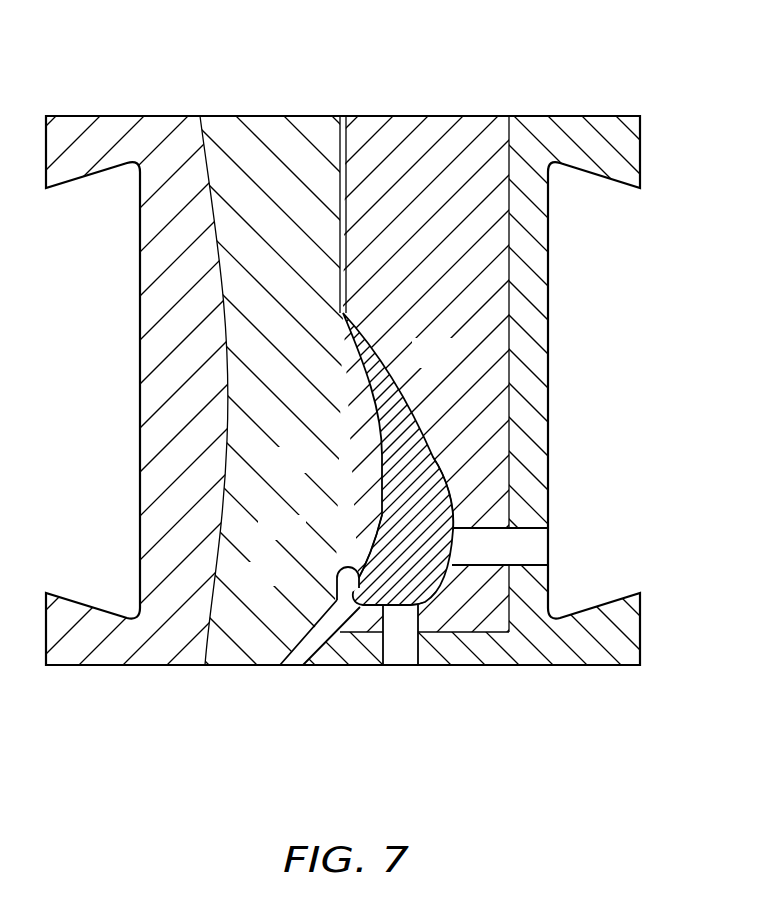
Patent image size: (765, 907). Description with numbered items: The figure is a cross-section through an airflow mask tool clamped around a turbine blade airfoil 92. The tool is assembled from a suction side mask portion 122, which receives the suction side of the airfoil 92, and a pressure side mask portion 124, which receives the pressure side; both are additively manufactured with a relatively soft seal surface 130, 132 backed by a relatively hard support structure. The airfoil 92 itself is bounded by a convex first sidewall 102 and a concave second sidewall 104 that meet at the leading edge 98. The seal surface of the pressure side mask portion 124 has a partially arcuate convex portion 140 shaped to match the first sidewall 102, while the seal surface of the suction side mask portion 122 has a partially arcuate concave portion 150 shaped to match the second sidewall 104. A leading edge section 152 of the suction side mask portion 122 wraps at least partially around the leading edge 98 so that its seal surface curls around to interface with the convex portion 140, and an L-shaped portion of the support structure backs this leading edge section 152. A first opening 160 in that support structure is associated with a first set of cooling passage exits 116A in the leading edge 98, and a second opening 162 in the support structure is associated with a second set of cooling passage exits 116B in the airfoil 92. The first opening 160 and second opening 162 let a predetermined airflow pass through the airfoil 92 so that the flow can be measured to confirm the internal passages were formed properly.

The airfoil 92 is at (418, 443).
The leading edge 98 is at (322, 590).
The first sidewall 102 is at (385, 485).
The second sidewall 104 is at (450, 470).
The first set of cooling passage exits 116A is at (402, 606).
The second set of cooling passage exits 116B is at (453, 547).
The suction side mask portion 122 is at (496, 97).
The pressure side mask portion 124 is at (252, 100).
The seal surface 130 is at (420, 130).
The seal surface 132 is at (288, 117).
The partially arcuate convex portion 140 is at (375, 553).
The partially arcuate concave portion 150 is at (443, 598).
The leading edge section 152 is at (349, 651).
The first opening 160 is at (412, 653).
The second opening 162 is at (533, 547).